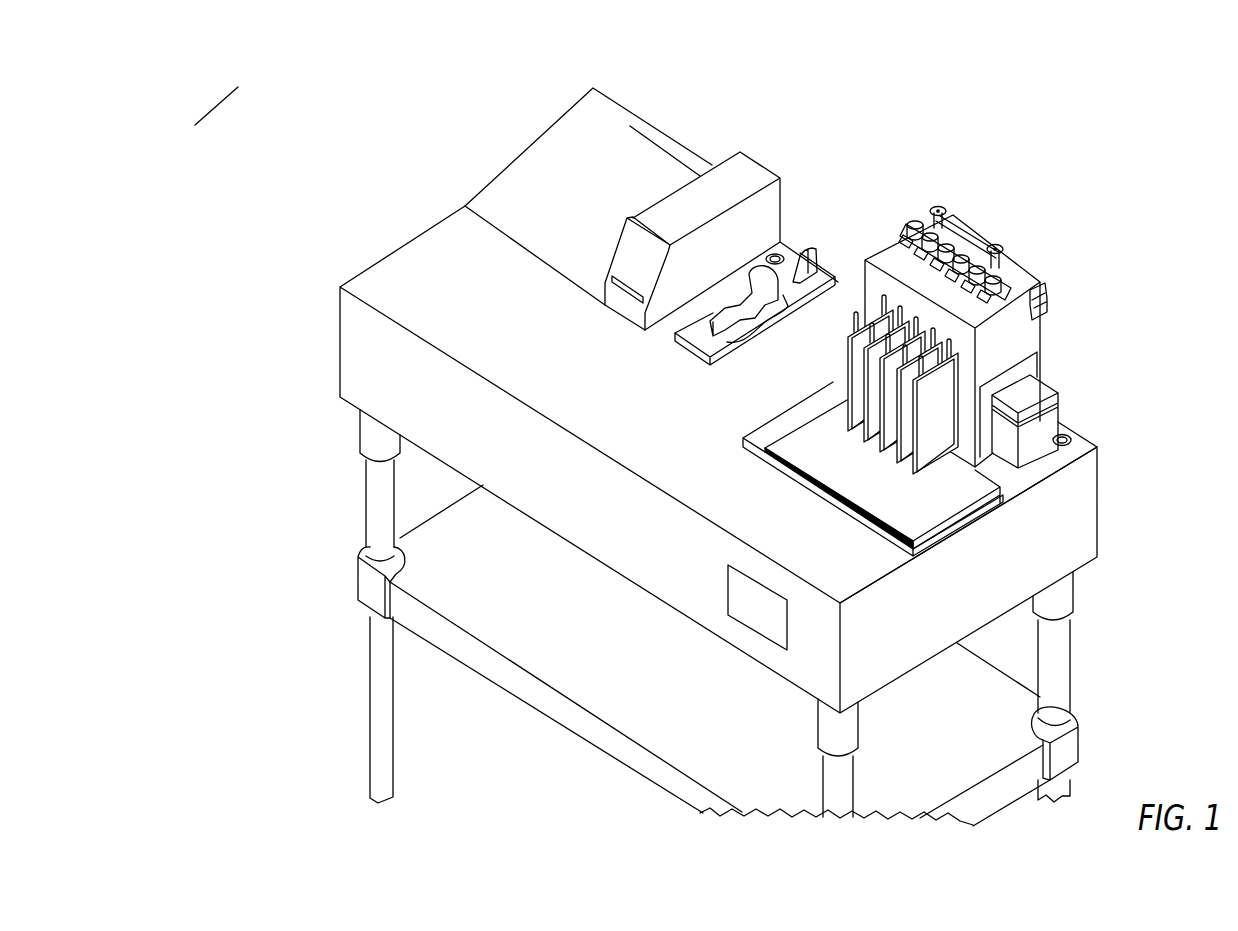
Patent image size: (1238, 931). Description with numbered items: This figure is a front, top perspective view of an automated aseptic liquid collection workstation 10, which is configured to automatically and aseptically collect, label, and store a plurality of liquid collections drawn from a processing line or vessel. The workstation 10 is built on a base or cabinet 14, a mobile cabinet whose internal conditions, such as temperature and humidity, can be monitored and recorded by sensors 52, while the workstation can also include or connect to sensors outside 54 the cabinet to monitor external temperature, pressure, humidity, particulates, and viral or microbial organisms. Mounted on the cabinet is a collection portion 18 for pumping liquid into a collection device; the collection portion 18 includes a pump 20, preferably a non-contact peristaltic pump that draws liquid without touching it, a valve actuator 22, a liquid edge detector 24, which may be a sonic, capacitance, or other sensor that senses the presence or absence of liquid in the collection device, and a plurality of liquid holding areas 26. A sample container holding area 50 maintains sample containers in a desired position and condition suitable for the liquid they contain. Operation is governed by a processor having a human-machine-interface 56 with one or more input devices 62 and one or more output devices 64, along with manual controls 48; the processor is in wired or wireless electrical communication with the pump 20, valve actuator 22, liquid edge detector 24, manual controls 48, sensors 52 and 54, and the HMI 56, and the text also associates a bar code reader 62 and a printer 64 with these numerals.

The workstation 10 is at (861, 136).
The base 14 is at (338, 337).
The collection portion 18 is at (1011, 151).
The pump 20 is at (1032, 397).
The valve actuator 22 is at (902, 248).
The liquid edge detector 24 is at (1040, 285).
The liquid holding areas 26 is at (862, 432).
The manual controls 48 is at (757, 612).
The sample container holding area 50 is at (786, 500).
The sensors 52 is at (917, 602).
The outside sensors 54 is at (220, 110).
The human-machine-interface 56 is at (586, 183).
The input devices 62 is at (690, 350).
The output devices 64 is at (623, 307).